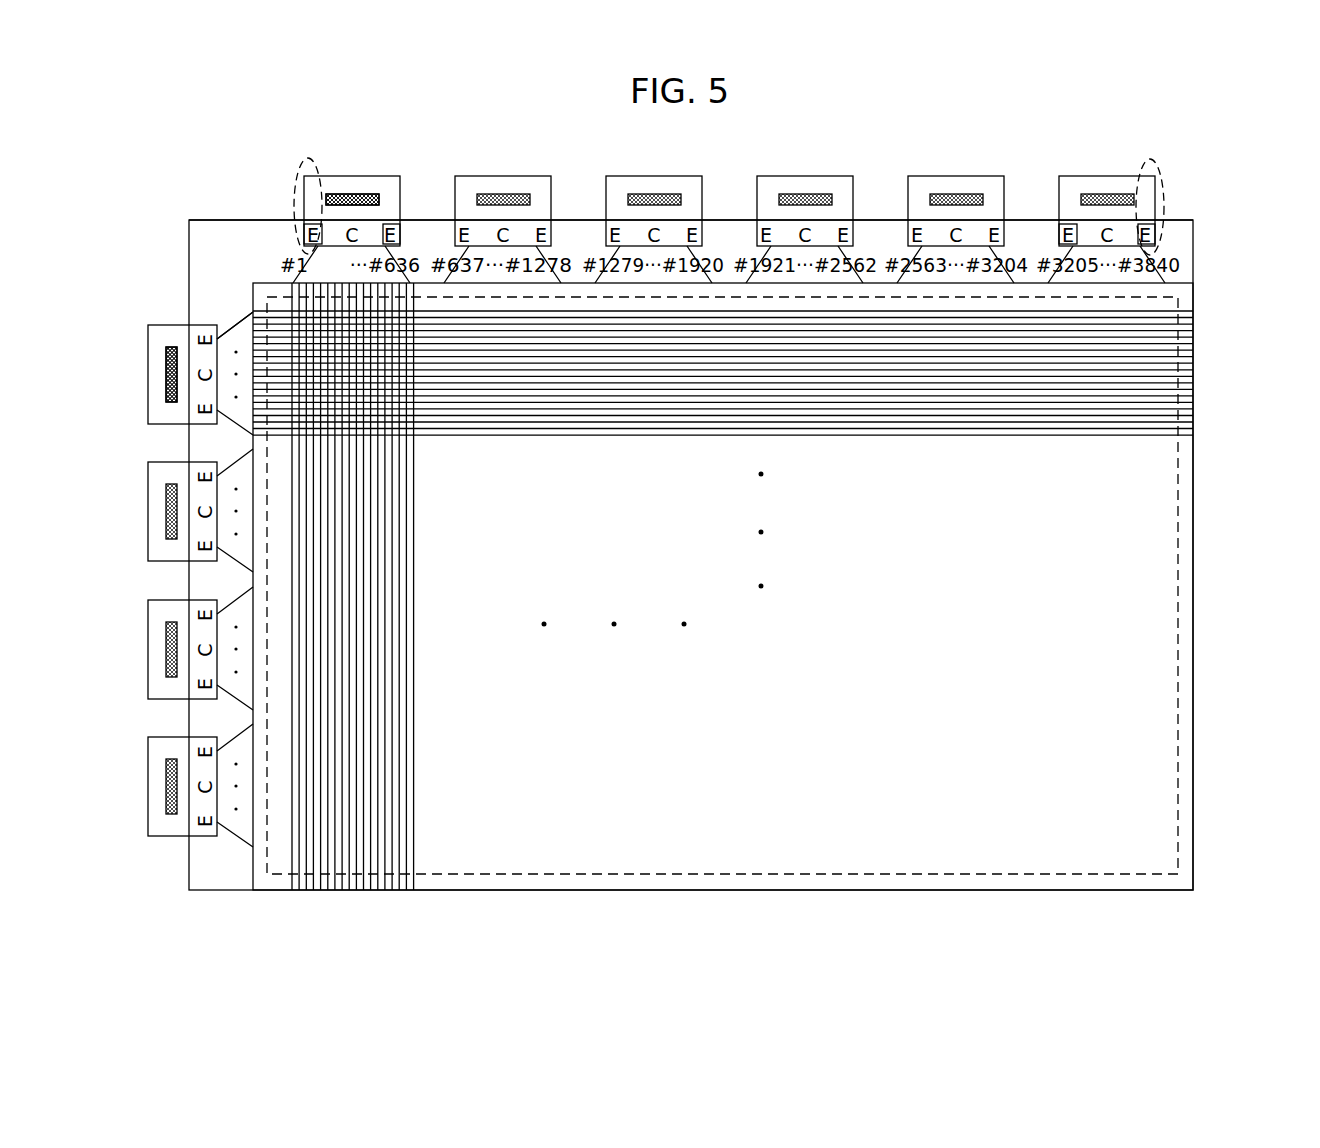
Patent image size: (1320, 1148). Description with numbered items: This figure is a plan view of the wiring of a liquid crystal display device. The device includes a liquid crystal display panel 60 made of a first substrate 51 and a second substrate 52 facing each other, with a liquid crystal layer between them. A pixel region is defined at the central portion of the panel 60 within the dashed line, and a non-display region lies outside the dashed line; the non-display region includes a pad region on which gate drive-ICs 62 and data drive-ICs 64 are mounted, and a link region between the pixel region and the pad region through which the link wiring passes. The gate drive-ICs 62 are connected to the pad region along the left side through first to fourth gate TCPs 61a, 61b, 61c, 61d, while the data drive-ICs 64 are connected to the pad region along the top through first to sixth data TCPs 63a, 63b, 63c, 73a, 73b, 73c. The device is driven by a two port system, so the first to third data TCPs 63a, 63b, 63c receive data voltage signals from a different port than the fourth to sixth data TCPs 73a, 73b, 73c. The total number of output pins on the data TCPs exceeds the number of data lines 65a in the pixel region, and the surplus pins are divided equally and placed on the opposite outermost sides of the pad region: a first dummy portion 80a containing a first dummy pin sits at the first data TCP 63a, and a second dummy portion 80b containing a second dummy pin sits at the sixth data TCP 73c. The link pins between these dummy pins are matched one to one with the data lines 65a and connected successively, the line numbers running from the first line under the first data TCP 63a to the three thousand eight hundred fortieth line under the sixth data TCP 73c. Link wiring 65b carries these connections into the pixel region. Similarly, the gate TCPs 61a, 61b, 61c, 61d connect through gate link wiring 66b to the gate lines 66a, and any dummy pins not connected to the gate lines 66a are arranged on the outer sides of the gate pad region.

The first substrate 51 is at (1183, 277).
The second substrate 52 is at (1193, 235).
The liquid crystal display panel 60 is at (1252, 224).
The first gate TCP 61a is at (150, 338).
The second gate TCP 61b is at (155, 505).
The third gate TCP 61c is at (155, 644).
The fourth gate TCP 61d is at (155, 782).
The gate drive-IC 62 is at (165, 375).
The first data TCP 63a is at (393, 198).
The second data TCP 63b is at (493, 184).
The third data TCP 63c is at (644, 184).
The data drive-IC 64 is at (360, 193).
The data line 65a is at (283, 298).
The data line 65b is at (290, 283).
The gate line 66a is at (283, 310).
The gate link line 66b is at (233, 327).
The fourth data TCP 73a is at (805, 184).
The fifth data TCP 73b is at (955, 184).
The sixth data TCP 73c is at (1084, 182).
The first dummy portion 80a is at (310, 160).
The second dummy portion 80b is at (1152, 158).